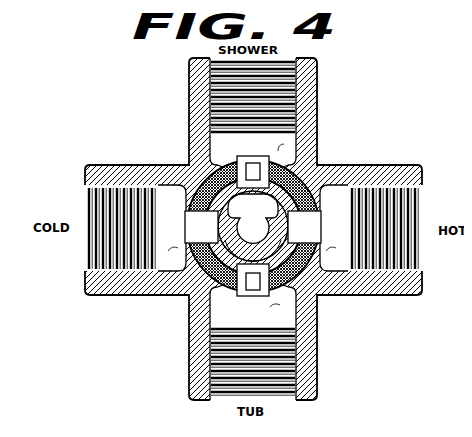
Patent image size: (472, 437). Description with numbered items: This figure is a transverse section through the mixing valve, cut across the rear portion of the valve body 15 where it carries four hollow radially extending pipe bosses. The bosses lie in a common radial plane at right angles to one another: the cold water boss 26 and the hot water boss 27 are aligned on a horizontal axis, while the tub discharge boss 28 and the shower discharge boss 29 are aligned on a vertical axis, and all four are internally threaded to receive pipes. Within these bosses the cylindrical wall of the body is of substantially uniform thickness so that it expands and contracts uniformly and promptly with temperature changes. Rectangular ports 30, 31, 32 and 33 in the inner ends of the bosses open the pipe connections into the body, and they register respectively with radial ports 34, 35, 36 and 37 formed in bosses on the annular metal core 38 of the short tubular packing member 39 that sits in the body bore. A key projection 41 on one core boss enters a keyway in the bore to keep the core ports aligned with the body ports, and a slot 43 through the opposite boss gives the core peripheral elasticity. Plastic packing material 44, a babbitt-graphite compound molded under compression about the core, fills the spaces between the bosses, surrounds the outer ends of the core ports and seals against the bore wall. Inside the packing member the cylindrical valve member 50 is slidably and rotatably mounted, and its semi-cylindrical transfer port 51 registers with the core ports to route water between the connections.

The valve body 15 is at (303, 158).
The cold water boss 26 is at (127, 285).
The hot water boss 27 is at (370, 286).
The tub discharge boss 28 is at (309, 360).
The shower discharge boss 29 is at (303, 84).
The valve body port 30 is at (172, 259).
The valve body port 31 is at (331, 259).
The valve body port 32 is at (280, 314).
The valve body port 33 is at (283, 150).
The radial core port 34 is at (134, 228).
The radial core port 35 is at (372, 228).
The radial core port 36 is at (252, 343).
The radial core port 37 is at (253, 111).
The annular metal core 38 is at (181, 290).
The tubular packing member 39 is at (283, 262).
The key projection 41 is at (244, 155).
The slot 43 is at (247, 282).
The packing material 44 is at (203, 182).
The valve member 50 is at (253, 226).
The transfer port 51 is at (253, 257).